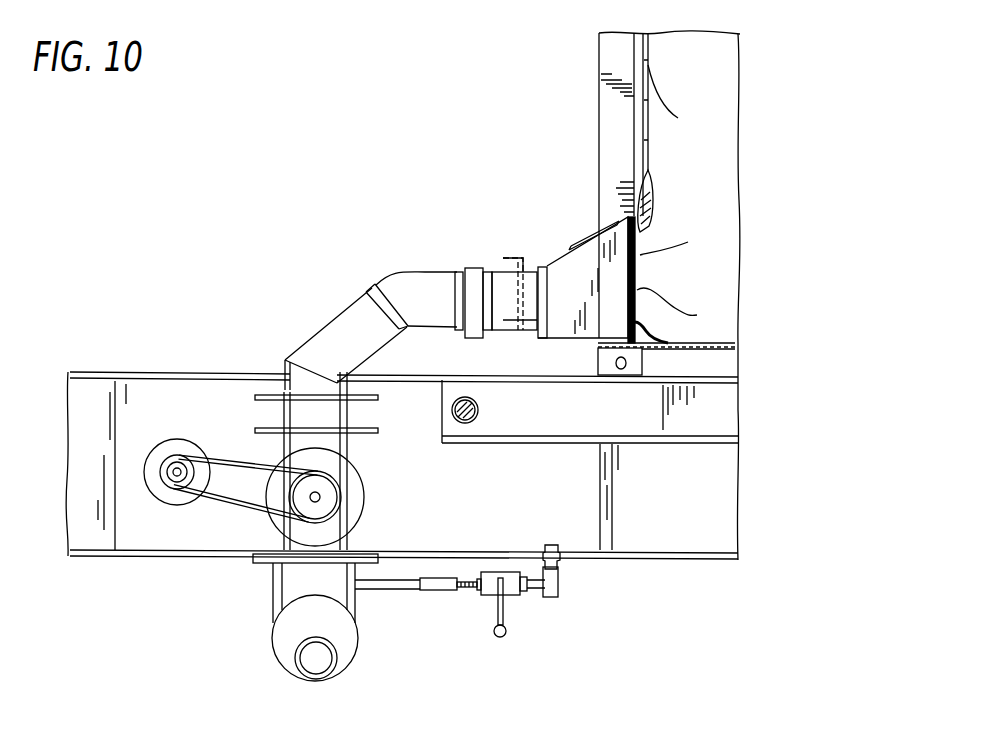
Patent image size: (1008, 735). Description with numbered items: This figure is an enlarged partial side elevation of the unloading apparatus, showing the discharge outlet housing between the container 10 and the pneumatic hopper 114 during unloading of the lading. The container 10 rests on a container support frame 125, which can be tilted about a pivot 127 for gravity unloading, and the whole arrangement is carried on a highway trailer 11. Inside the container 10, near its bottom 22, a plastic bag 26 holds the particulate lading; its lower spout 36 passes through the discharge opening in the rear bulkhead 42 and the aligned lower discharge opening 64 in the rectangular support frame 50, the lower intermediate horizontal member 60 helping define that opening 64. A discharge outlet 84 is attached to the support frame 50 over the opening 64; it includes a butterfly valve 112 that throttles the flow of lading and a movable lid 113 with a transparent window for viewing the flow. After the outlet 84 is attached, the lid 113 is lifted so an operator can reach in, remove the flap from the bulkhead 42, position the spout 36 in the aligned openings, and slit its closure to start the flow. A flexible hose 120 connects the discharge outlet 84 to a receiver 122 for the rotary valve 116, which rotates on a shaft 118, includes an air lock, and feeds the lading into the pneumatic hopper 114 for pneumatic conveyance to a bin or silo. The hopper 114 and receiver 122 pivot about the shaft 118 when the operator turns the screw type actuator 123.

The container 10 is at (597, 48).
The highway trailer 11 is at (126, 558).
The bottom 22 is at (715, 345).
The plastic bag 26 is at (724, 77).
The spout 36 is at (637, 308).
The rear bulkhead 42 is at (651, 145).
The support frame 50 is at (632, 120).
The intermediate horizontal members 60 is at (648, 200).
The lower discharge opening 64 is at (636, 226).
The discharge outlet 84 is at (488, 250).
The butterfly valve 112 is at (512, 255).
The movable lid 113 is at (588, 237).
The pneumatic hopper 114 is at (270, 602).
The rotary valve 116 is at (351, 478).
The shaft 118 is at (320, 502).
The flexible hose 120 is at (413, 283).
The receiver 122 is at (340, 330).
The screw type actuator 123 is at (507, 597).
The container support frame 125 is at (717, 449).
The pivot 127 is at (480, 410).